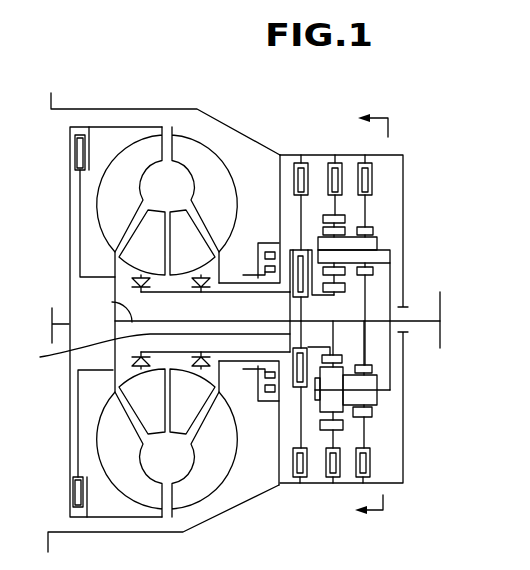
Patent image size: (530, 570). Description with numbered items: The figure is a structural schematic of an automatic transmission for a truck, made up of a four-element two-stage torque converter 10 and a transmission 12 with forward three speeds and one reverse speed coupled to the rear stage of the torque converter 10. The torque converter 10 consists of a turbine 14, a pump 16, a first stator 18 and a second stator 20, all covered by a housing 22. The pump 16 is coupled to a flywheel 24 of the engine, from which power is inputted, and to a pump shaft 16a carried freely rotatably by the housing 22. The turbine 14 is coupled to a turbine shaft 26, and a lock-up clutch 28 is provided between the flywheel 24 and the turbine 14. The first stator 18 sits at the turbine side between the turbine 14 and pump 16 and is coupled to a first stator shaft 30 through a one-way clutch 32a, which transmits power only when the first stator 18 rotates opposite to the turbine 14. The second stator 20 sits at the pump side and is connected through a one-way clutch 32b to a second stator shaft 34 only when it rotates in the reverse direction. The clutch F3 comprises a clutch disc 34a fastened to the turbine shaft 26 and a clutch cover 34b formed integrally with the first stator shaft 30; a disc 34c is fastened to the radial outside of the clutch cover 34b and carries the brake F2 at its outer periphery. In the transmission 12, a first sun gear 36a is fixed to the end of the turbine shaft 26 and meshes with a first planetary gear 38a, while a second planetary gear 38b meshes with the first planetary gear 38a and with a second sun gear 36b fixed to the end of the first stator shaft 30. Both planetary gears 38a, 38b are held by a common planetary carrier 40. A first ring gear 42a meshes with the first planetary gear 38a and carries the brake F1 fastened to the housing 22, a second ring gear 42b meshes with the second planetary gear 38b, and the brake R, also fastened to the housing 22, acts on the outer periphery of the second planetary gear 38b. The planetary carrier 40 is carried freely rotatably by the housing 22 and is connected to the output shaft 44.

The torque converter 10 is at (247, 75).
The transmission 12 is at (386, 97).
The turbine 14 is at (133, 199).
The pump 16 is at (224, 199).
The pump shaft 16a is at (232, 278).
The first stator 18 is at (158, 253).
The second stator 20 is at (201, 253).
The housing 22 is at (152, 109).
The flywheel 24 is at (68, 259).
The turbine shaft 26 is at (112, 302).
The lock-up clutch 28 is at (58, 174).
The first stator shaft 30 is at (153, 352).
The one-way clutch 32a is at (134, 363).
The one-way clutch 32b is at (196, 366).
The second stator shaft 34 is at (218, 294).
The clutch disc 34a is at (290, 314).
The clutch cover 34b is at (290, 390).
The disc 34c is at (298, 433).
The first sun gear 36a is at (378, 266).
The second sun gear 36b is at (343, 358).
The first planetary gear 38a is at (367, 246).
The second planetary gear 38b is at (345, 226).
The planetary carrier 40 is at (392, 383).
The first ring gear 42a is at (368, 231).
The second ring gear 42b is at (343, 426).
The output shaft 44 is at (445, 340).
The brake F1 is at (352, 167).
The brake F2 is at (288, 168).
The clutch F3 is at (291, 233).
The brake R is at (320, 170).